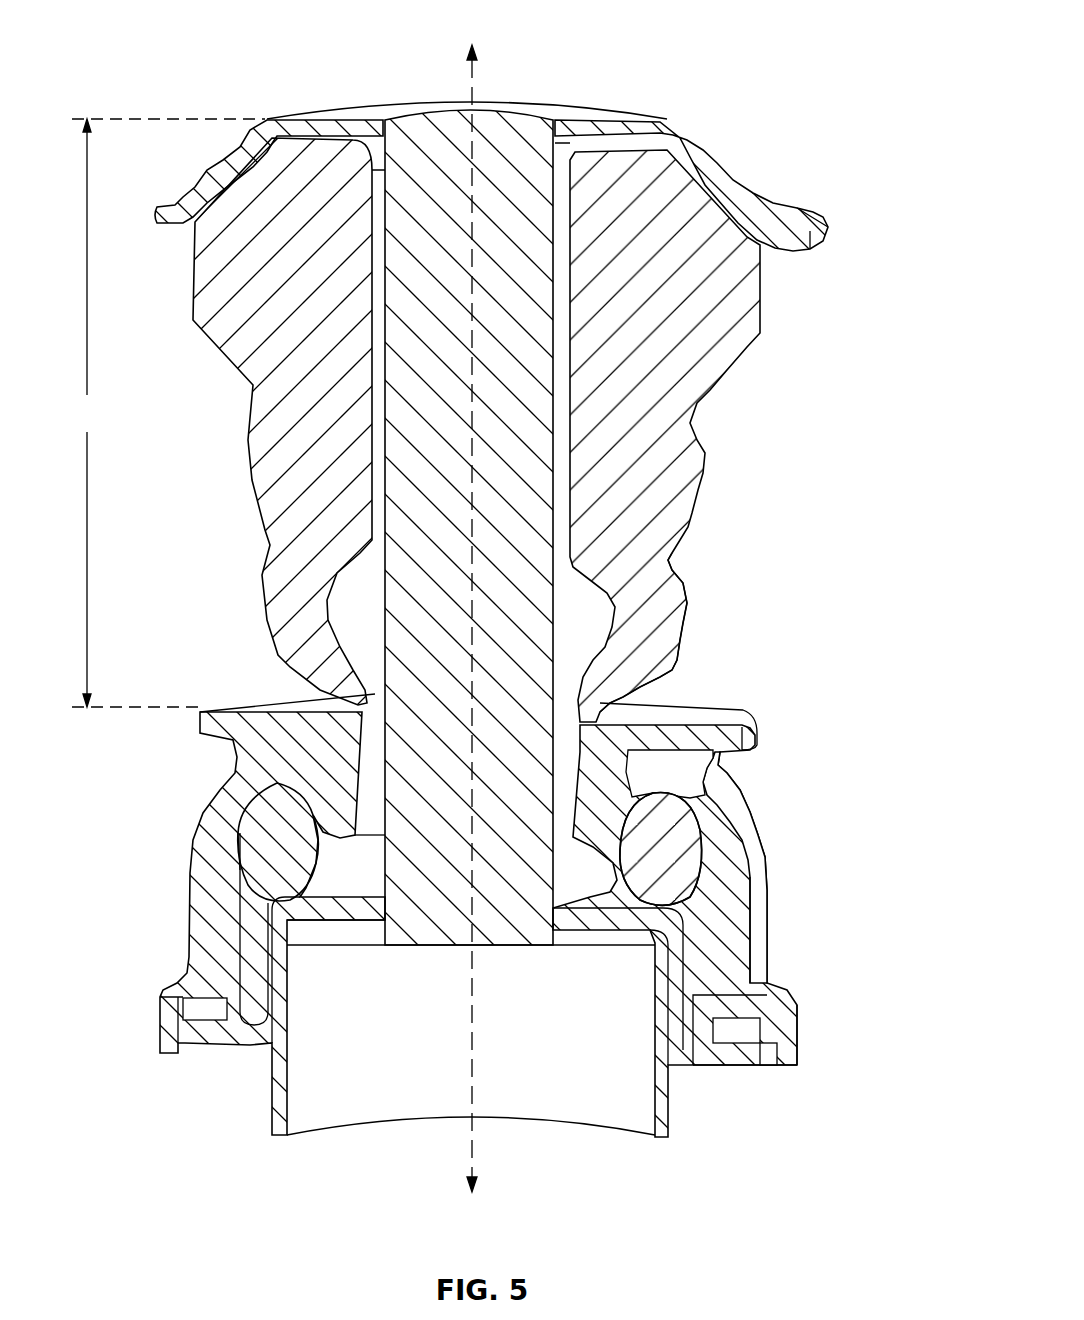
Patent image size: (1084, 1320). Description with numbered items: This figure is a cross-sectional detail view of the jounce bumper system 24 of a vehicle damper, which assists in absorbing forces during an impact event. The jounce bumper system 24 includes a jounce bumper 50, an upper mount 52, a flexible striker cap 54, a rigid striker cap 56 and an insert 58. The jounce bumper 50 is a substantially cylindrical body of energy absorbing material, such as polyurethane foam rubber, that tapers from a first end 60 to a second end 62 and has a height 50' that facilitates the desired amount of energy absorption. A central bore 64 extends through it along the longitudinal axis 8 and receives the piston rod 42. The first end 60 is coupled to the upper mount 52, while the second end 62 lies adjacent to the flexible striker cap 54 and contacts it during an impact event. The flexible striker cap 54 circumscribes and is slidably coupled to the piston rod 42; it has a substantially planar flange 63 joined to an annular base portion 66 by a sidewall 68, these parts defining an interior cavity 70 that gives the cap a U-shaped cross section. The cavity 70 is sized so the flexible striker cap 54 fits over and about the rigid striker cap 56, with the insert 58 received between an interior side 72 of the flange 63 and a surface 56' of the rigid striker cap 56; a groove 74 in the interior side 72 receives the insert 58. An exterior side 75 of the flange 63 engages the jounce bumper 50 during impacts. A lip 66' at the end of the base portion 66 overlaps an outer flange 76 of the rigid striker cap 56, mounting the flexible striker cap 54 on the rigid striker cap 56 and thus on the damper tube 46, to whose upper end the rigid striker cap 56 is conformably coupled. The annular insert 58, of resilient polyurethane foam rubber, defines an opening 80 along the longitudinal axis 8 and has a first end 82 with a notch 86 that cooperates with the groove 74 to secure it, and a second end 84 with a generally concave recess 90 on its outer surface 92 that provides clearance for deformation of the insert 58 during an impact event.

The longitudinal axis 8 is at (477, 1137).
The jounce bumper system 24 is at (498, 602).
The piston rod 42 is at (500, 142).
The damper tube 46 is at (278, 1107).
The jounce bumper 50 is at (510, 430).
The height 50' is at (166, 413).
The upper mount 52 is at (662, 130).
The flexible striker cap 54 is at (862, 826).
The rigid striker cap 56 is at (743, 1089).
The surface 56' is at (167, 1006).
The insert 58 is at (745, 828).
The first end 60 is at (693, 149).
The second end 62 is at (640, 690).
The flange 63 is at (759, 734).
The central bore 64 is at (557, 383).
The base portion 66 is at (840, 1033).
The lip 66' is at (806, 1083).
The sidewall 68 is at (770, 890).
The interior cavity 70 is at (665, 1002).
The interior side 72 is at (378, 888).
The groove 74 is at (690, 797).
The exterior side 75 is at (227, 702).
The outer flange 76 is at (720, 1057).
The opening 80 is at (575, 858).
The first end 82 is at (277, 773).
The second end 84 is at (290, 910).
The notch 86 is at (230, 770).
The recess 90 is at (747, 958).
The outer surface 92 is at (257, 892).